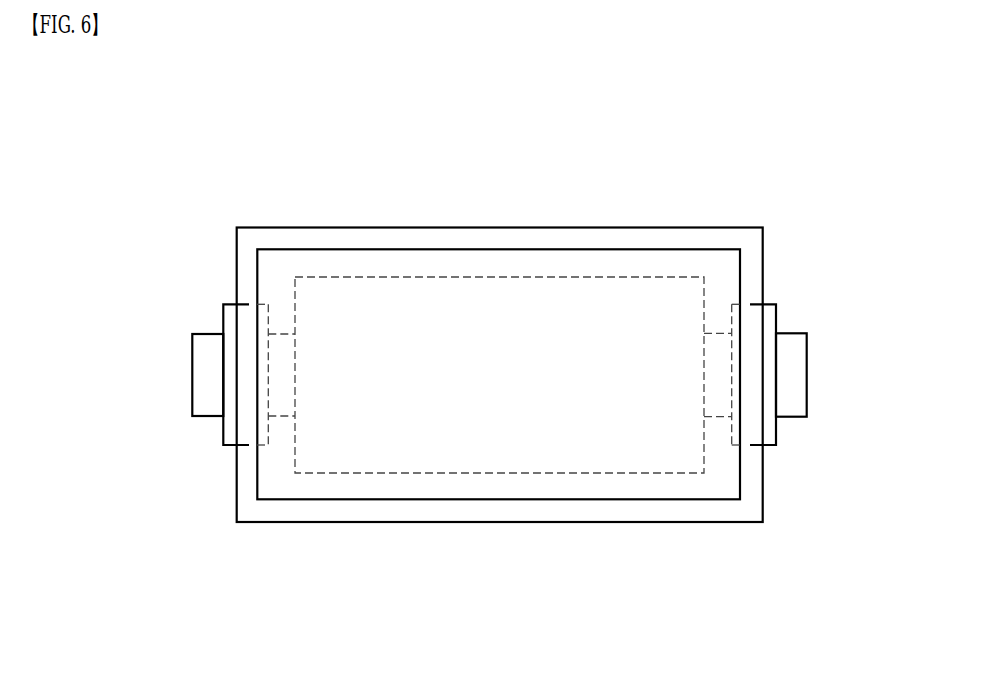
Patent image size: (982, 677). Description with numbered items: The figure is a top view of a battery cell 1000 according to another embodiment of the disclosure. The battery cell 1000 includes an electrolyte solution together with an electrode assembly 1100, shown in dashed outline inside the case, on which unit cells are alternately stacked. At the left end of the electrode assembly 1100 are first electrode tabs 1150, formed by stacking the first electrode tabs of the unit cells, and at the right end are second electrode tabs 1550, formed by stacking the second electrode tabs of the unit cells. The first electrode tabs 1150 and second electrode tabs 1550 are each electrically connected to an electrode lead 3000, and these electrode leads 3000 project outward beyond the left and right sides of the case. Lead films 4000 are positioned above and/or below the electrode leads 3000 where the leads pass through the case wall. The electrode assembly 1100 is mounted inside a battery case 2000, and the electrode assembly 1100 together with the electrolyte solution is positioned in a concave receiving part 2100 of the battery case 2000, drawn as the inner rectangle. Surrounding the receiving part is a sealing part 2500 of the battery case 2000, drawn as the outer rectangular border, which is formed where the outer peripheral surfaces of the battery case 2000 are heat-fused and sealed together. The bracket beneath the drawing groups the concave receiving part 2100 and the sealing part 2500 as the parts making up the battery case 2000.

The battery cell 1000 is at (412, 108).
The electrode assembly 1100 is at (528, 277).
The first electrode tabs 1150 is at (287, 393).
The second electrode tabs 1550 is at (712, 393).
The battery case 2000 is at (510, 590).
The concave receiving part 2100 is at (407, 492).
The sealing part 2500 is at (487, 512).
The electrode leads 3000 is at (200, 370).
The lead films 4000 is at (228, 431).